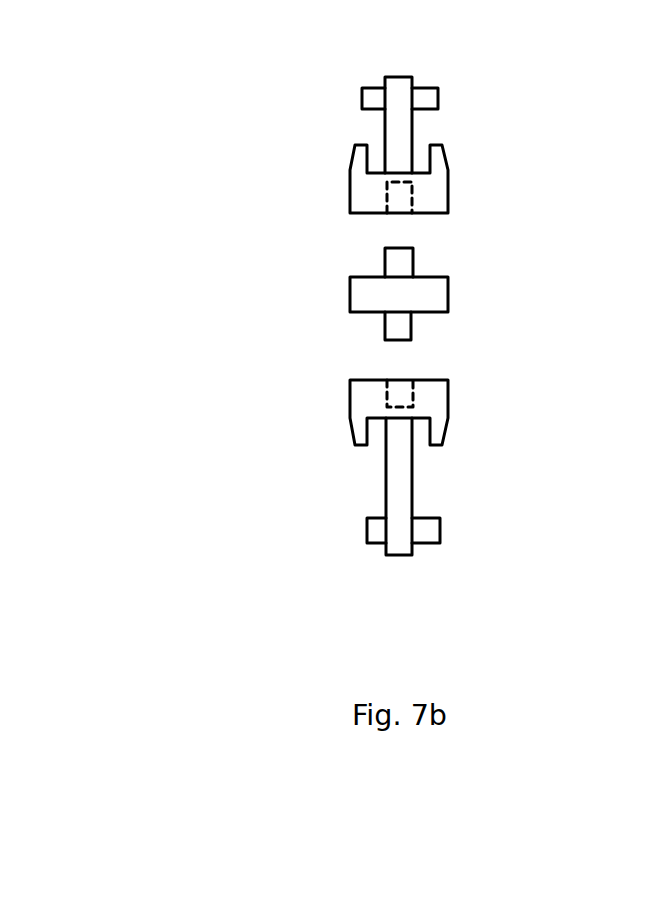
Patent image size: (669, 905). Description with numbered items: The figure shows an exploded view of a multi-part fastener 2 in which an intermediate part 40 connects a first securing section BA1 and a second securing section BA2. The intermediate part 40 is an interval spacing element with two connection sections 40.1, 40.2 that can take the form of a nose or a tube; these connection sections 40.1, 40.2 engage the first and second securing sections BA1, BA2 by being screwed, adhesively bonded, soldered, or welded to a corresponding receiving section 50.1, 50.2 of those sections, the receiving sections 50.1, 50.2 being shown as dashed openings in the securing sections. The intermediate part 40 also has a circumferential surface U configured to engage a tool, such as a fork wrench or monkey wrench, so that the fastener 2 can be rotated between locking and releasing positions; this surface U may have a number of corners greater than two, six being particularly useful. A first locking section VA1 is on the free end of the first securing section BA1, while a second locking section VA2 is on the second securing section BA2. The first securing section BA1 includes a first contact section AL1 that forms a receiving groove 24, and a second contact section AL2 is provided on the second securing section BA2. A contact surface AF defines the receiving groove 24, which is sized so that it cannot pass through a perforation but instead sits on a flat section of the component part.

The fastener 2 is at (179, 123).
The receiving groove 24 is at (362, 133).
The second locking section VA2 is at (466, 98).
The second contact section AL2 is at (346, 142).
The contact surface AF is at (443, 144).
The second securing section BA2 is at (443, 180).
The receiving section 50.1 is at (385, 193).
The connection section 40.1 is at (390, 263).
The intermediate part 40 is at (360, 293).
The circumferential surface U is at (407, 306).
The connection section 40.2 is at (380, 335).
The receiving section 50.2 is at (382, 396).
The first contact section AL1 is at (337, 438).
The first securing section BA1 is at (447, 449).
The first locking section VA1 is at (334, 532).